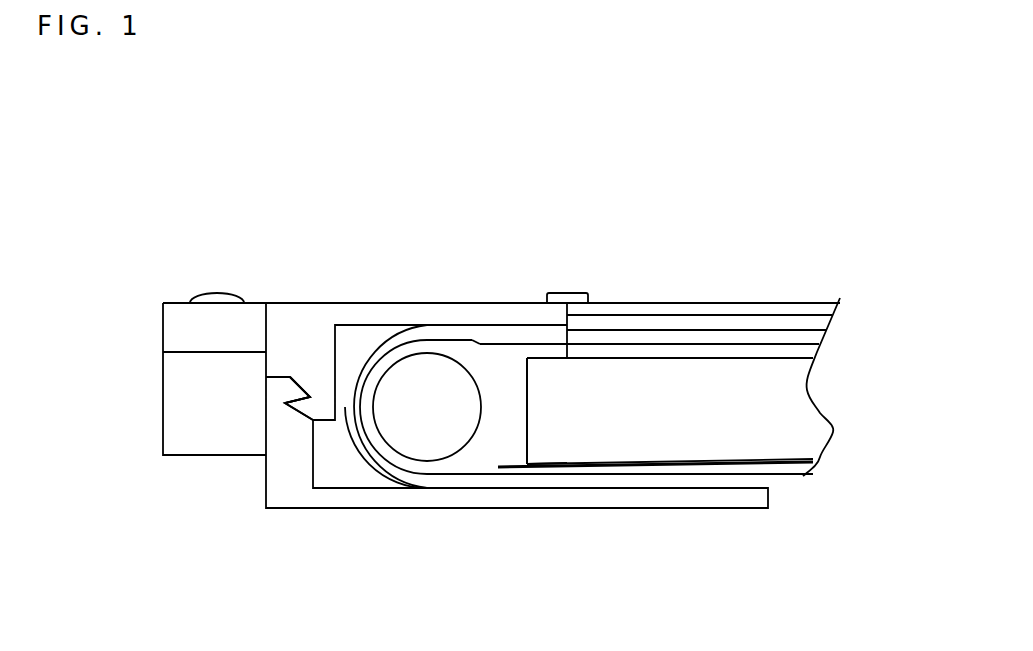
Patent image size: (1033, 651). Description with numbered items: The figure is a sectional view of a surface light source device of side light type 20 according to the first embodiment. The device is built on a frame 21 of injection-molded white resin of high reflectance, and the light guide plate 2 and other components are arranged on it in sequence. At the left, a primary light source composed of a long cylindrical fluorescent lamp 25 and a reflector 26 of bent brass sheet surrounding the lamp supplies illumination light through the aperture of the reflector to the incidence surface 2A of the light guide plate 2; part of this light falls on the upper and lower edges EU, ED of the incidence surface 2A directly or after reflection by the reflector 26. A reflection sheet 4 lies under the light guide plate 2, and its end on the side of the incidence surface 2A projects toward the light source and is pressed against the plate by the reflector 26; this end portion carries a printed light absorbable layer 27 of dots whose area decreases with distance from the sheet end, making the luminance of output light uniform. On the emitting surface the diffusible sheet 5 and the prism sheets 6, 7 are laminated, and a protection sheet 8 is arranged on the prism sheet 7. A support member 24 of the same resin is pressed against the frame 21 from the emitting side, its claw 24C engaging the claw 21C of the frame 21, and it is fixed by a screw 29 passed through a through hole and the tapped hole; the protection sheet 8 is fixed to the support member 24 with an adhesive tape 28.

The surface light source device of side light type 20 is at (284, 168).
The light guide plate 2 is at (650, 432).
The incidence surface 2A is at (527, 413).
The upper edge of the incidence surface EU is at (527, 360).
The lower edge of the incidence surface ED is at (530, 463).
The reflection sheet 4 is at (728, 465).
The diffusible sheet 5 is at (815, 352).
The prism sheet 6 is at (820, 335).
The prism sheet 7 is at (827, 320).
The protection sheet 8 is at (838, 302).
The frame 21 is at (408, 497).
The claw 21C is at (278, 390).
The support member 24 is at (288, 327).
The claw 24C is at (313, 397).
The fluorescent lamp 25 is at (438, 423).
The reflector 26 is at (367, 452).
The light absorbable layer 27 is at (562, 472).
The adhesive tape 28 is at (577, 293).
The screw 29 is at (211, 300).